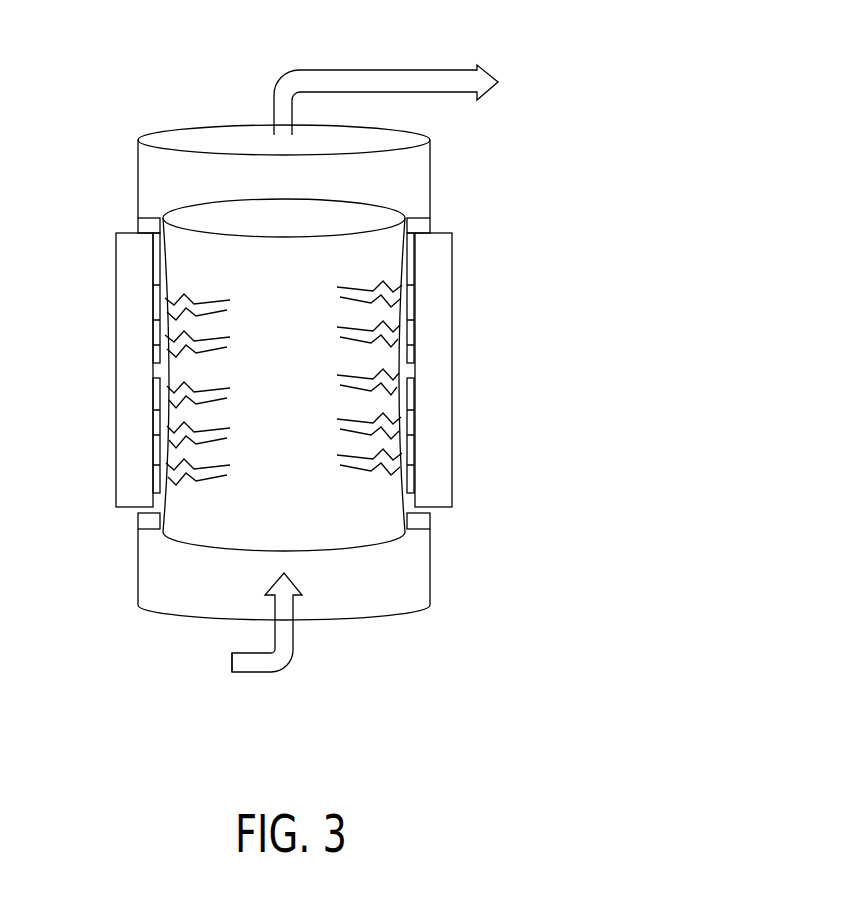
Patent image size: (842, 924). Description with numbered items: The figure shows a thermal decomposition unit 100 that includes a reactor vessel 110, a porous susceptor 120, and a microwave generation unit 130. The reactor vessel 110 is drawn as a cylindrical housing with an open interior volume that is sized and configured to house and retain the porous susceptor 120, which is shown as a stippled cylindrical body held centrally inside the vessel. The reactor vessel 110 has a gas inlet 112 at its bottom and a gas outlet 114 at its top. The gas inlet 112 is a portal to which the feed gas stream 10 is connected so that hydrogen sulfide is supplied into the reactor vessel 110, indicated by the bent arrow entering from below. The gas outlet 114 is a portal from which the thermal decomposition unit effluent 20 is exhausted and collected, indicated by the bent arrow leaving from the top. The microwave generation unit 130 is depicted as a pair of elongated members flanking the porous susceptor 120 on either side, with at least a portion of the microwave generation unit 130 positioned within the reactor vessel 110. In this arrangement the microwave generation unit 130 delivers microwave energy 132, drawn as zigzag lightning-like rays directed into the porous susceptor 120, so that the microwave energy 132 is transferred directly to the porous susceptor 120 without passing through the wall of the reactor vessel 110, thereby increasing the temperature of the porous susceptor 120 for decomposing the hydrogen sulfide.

The feed gas stream 10 is at (245, 668).
The thermal decomposition unit effluent 20 is at (385, 78).
The thermal decomposition unit 100 is at (346, 377).
The reactor vessel 110 is at (142, 582).
The gas inlet 112 is at (305, 636).
The gas outlet 114 is at (252, 126).
The porous susceptor 120 is at (387, 216).
The microwave generation unit 130 is at (118, 372).
The microwave energy 132 is at (207, 477).